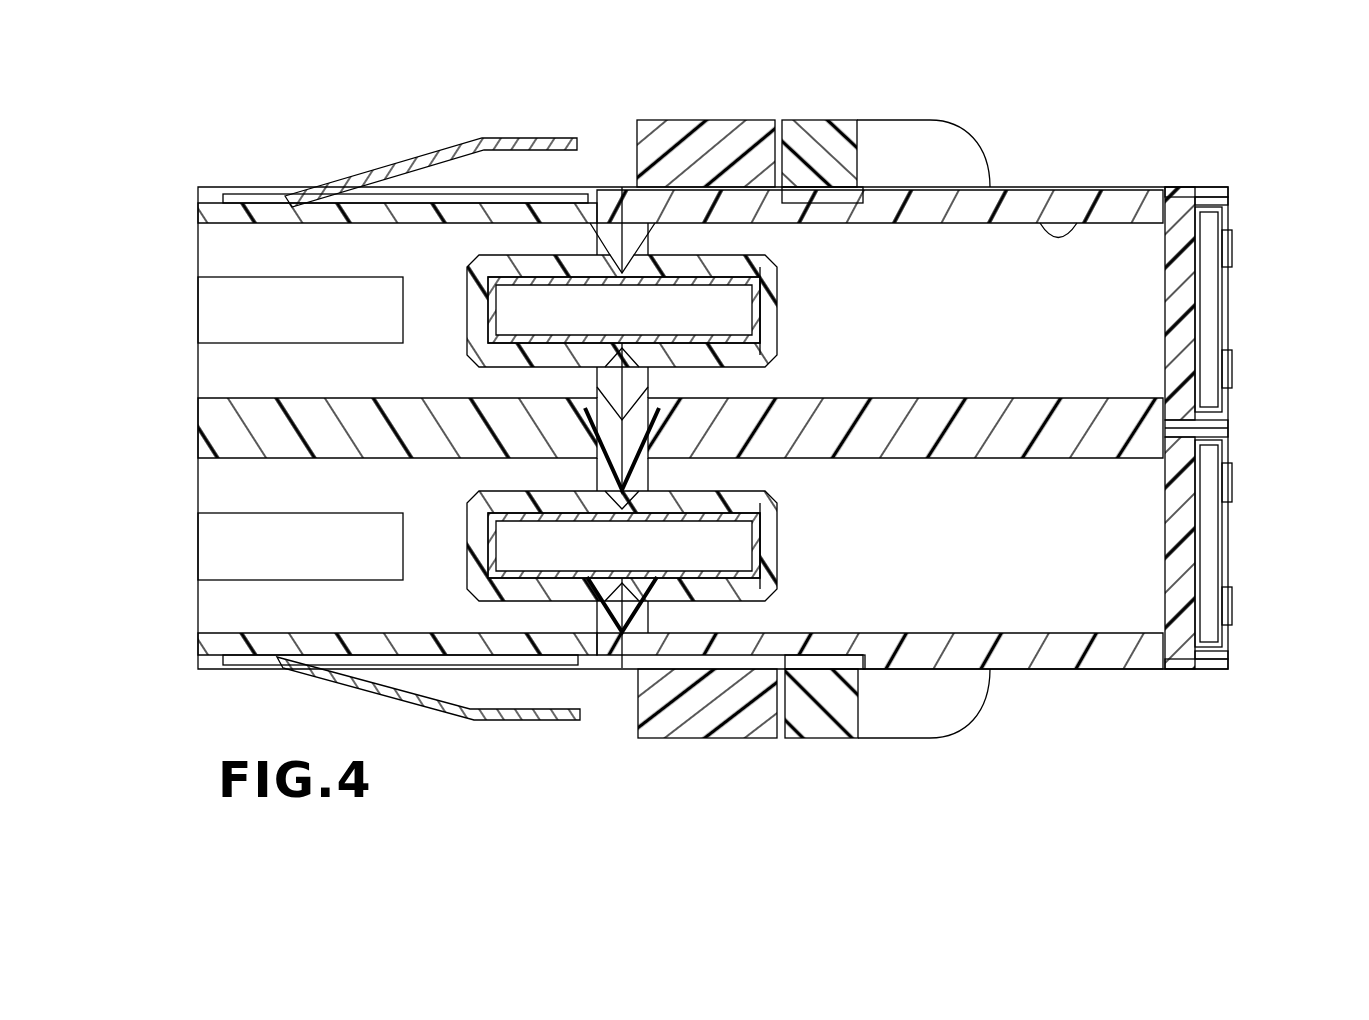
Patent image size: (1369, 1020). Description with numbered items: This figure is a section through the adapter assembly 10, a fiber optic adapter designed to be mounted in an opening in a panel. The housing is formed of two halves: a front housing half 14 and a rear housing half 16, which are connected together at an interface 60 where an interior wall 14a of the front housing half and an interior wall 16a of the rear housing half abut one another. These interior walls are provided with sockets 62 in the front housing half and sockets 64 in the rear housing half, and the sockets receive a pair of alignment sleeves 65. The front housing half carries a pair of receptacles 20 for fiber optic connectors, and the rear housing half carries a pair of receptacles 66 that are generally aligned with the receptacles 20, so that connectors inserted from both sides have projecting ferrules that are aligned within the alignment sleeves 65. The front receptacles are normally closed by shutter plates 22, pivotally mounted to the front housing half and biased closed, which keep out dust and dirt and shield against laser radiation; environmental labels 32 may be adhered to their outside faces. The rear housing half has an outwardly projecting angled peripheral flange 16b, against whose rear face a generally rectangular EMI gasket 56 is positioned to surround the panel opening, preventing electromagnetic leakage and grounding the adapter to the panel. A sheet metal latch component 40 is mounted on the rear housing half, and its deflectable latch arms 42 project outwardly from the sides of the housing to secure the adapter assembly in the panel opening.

The adapter assembly 10 is at (796, 96).
The front housing half 14 is at (1022, 197).
The interior wall 14a is at (620, 478).
The rear housing half 16 is at (407, 212).
The interior wall 16a is at (625, 415).
The peripheral flange 16b is at (838, 132).
The receptacles 20 is at (1075, 227).
The shutter plates 22 is at (1222, 242).
The environmental labels 32 is at (1212, 332).
The latch component 40 is at (322, 178).
The latch arms 42 is at (503, 133).
The EMI gasket 56 is at (697, 150).
The interface 60 is at (617, 180).
The sockets 62 is at (725, 350).
The sockets 64 is at (500, 264).
The alignment sleeves 65 is at (712, 330).
The receptacles 66 is at (247, 212).